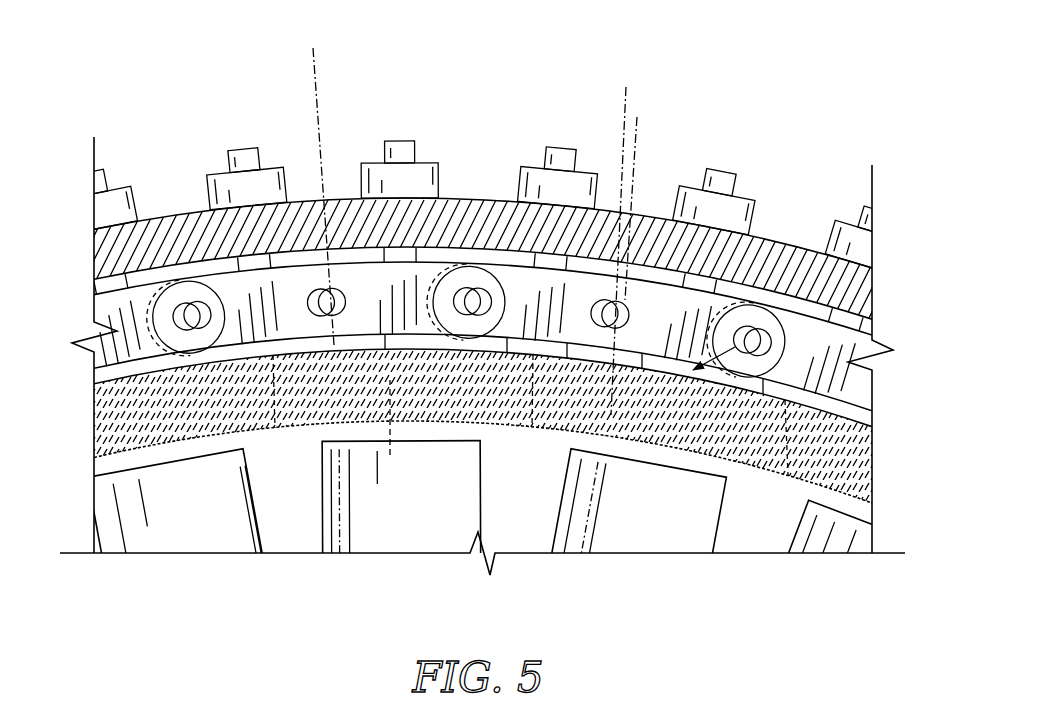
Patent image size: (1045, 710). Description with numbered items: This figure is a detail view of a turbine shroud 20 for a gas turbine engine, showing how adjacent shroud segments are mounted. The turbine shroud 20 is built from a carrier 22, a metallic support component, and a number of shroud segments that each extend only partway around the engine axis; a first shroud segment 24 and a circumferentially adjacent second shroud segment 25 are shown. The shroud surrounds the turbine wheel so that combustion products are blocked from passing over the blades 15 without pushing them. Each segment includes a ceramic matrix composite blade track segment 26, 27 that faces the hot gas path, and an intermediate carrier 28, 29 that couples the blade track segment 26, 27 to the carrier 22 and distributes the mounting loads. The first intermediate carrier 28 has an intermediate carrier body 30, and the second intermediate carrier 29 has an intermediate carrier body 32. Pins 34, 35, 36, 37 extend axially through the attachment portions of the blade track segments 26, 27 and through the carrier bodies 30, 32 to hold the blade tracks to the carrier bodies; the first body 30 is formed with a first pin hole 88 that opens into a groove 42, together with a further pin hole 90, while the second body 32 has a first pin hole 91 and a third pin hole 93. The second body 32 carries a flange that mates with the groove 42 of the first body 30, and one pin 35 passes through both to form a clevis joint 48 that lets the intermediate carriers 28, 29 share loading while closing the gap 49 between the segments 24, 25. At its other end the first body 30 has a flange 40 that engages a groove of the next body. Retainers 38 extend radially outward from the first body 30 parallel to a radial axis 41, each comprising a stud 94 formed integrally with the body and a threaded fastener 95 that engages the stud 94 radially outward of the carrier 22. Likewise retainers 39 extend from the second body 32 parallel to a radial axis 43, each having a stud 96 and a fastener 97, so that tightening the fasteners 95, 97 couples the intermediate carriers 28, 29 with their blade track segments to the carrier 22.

The blades 15 is at (97, 508).
The turbine shroud 20 is at (115, 105).
The carrier 22 is at (170, 212).
The first shroud segment 24 is at (328, 118).
The second shroud segment 25 is at (755, 115).
The blade track segment 26 is at (303, 432).
The blade track segment 27 is at (792, 395).
The first intermediate carrier 28 is at (432, 150).
The second intermediate carrier 29 is at (755, 185).
The first intermediate carrier body 30 is at (422, 262).
The second intermediate carrier body 32 is at (680, 275).
The pin 34 is at (333, 290).
The pin 35 is at (472, 285).
The pin 36 is at (632, 302).
The pin 37 is at (187, 300).
The first retainers 38 is at (228, 160).
The second retainers 39 is at (532, 150).
The flange 40 is at (100, 415).
The radial axis 41 is at (317, 181).
The groove 42 is at (390, 431).
The radial axis 43 is at (626, 236).
The joint 48 is at (201, 362).
The gap 49 is at (273, 337).
The first pin hole 88 is at (497, 307).
The pin hole 90 is at (352, 313).
The first pin hole 91 is at (234, 328).
The third pin hole 93 is at (638, 335).
The stud 94 is at (248, 140).
The fastener 95 is at (270, 158).
The stud 96 is at (557, 140).
The fastener 97 is at (580, 165).